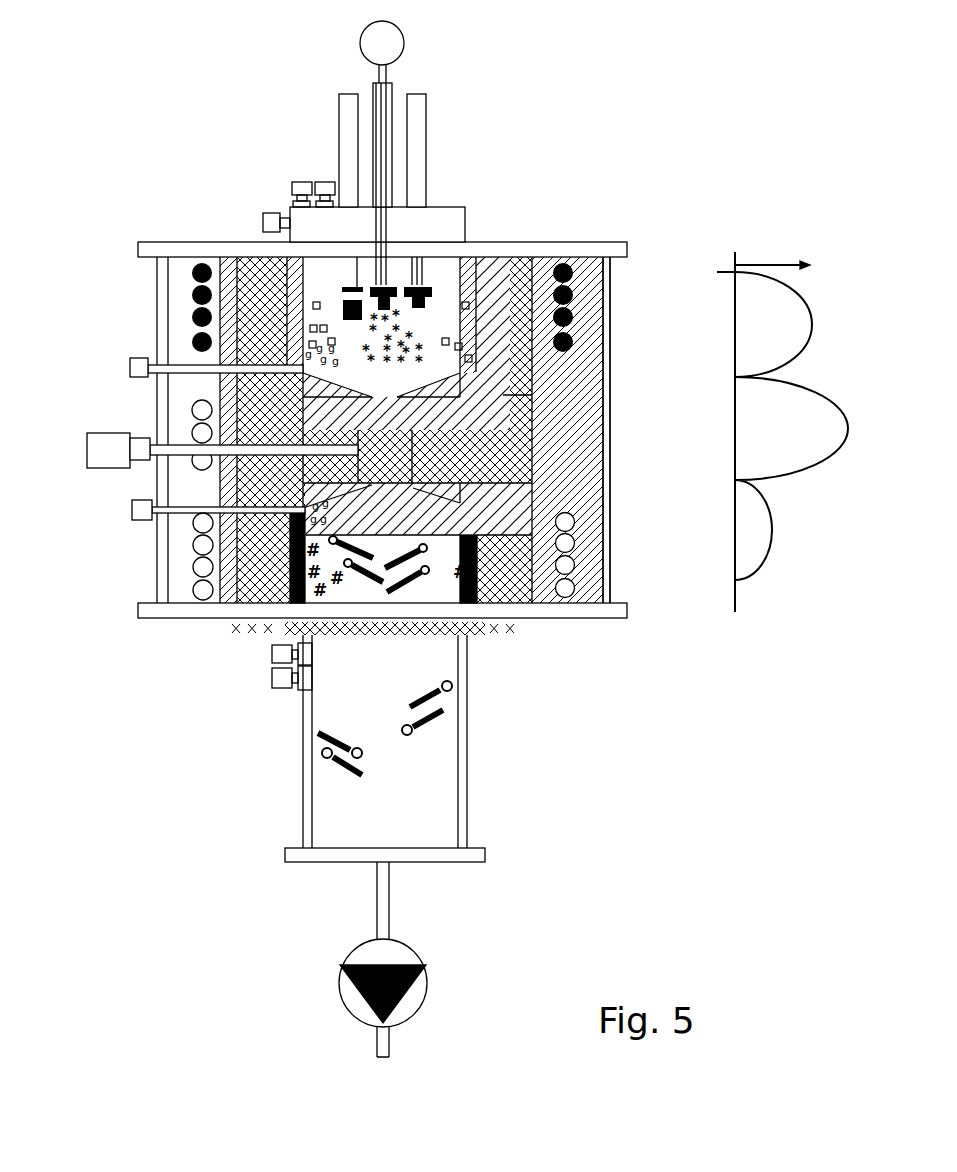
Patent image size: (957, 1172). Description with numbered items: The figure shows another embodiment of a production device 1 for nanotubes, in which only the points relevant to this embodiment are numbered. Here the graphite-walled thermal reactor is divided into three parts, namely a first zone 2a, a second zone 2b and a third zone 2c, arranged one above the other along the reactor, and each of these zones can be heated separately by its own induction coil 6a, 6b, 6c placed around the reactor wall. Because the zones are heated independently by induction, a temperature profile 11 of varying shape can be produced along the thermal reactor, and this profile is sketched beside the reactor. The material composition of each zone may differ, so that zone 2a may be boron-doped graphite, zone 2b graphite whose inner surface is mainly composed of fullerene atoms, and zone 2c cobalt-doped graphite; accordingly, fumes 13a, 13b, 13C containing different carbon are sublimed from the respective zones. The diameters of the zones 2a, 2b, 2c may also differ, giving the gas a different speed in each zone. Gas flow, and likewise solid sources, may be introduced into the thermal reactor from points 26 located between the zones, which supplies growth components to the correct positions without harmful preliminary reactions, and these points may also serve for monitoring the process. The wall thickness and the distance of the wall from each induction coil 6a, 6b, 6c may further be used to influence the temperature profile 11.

The production device 1 is at (623, 198).
The temperature profile 11 is at (795, 250).
The first zone of thermal reactor 2a is at (217, 305).
The second zone of thermal reactor 2b is at (217, 427).
The third zone of thermal reactor 2c is at (217, 575).
The gas introduction points 26 is at (122, 365).
The first induction coil 6a is at (573, 302).
The second induction coil 6b is at (612, 440).
The third induction coil 6c is at (612, 548).
The first fumes 13a is at (480, 355).
The second fumes 13b is at (612, 465).
The third fumes 13C is at (612, 590).